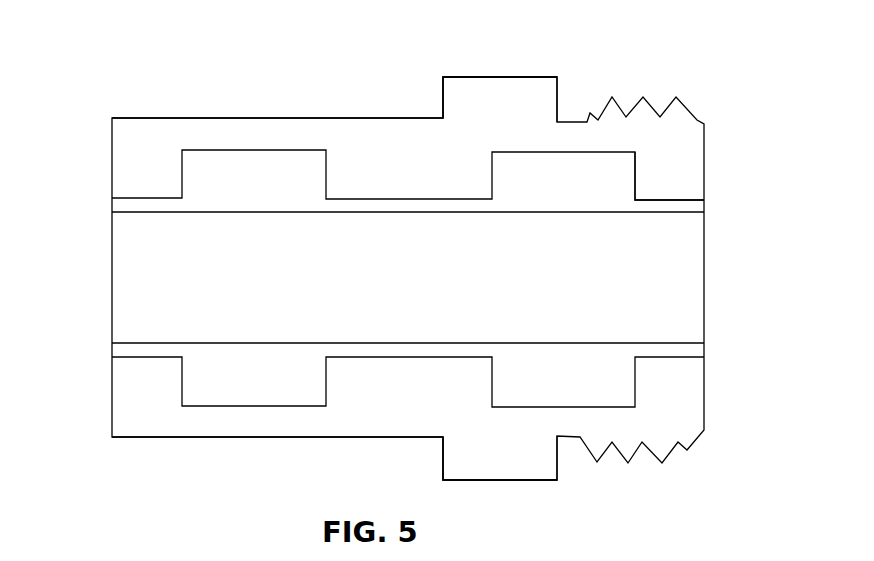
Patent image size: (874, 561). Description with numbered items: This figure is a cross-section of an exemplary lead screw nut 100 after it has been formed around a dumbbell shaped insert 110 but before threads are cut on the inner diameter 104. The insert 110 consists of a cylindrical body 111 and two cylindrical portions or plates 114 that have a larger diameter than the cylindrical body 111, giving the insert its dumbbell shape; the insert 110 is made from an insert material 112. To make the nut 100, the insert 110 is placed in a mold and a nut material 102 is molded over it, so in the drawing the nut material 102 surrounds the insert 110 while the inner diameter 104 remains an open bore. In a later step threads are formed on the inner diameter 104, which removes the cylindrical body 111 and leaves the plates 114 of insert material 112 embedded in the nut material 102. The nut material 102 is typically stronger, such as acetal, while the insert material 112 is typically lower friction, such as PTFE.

The lead screw nut 100 is at (622, 50).
The nut material 102 is at (398, 153).
The inner diameter 104 is at (150, 250).
The dumbbell shaped insert 110 is at (148, 158).
The cylindrical body 111 is at (683, 198).
The insert material 112 is at (255, 175).
The plates 114 is at (247, 406).